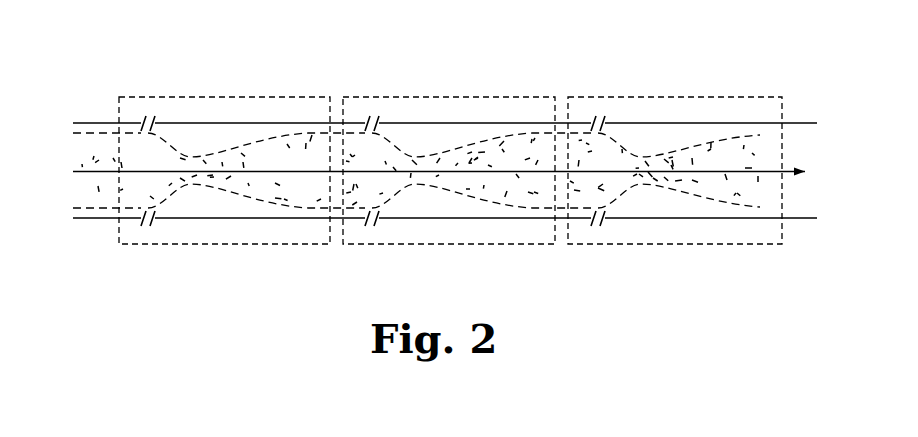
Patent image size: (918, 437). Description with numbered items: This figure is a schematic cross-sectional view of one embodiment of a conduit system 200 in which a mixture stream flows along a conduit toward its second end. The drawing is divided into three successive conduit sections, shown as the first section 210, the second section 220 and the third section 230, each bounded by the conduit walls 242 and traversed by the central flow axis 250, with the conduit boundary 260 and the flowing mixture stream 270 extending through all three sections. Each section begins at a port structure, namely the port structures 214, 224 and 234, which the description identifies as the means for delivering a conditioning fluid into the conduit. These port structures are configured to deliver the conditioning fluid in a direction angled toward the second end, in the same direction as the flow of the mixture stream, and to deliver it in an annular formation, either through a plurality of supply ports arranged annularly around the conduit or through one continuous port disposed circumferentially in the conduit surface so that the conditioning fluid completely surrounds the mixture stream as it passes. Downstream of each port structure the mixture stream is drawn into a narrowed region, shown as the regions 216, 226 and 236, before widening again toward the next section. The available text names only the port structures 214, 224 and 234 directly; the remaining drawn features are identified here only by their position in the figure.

The optical mode conversion device 200 is at (99, 32).
The first conversion section 210 is at (283, 255).
The port structure 214 is at (144, 113).
The first beam waist region 216 is at (212, 208).
The second conversion section 220 is at (510, 255).
The port structure 224 is at (370, 113).
The second beam waist region 226 is at (420, 209).
The third conversion section 230 is at (737, 255).
The port structure 234 is at (592, 113).
The third beam waist region 236 is at (667, 208).
The waveguide walls 242 is at (473, 122).
The optical axis / propagation direction 250 is at (464, 175).
The waveguide boundary 260 is at (62, 129).
The optical beam 270 is at (75, 157).